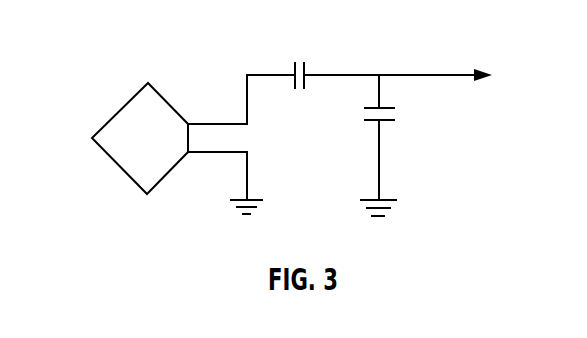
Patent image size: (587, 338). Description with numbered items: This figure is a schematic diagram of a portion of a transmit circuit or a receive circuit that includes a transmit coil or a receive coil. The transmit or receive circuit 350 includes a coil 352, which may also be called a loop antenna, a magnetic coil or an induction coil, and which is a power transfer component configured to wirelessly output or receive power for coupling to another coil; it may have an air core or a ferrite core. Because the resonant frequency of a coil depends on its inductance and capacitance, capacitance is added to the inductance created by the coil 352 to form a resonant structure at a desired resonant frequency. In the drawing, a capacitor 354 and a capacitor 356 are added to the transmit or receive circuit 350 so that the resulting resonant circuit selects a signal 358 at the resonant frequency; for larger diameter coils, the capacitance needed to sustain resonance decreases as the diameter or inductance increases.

The transmit or receive circuit 350 is at (165, 46).
The coil 352 is at (118, 112).
The capacitor 354 is at (308, 72).
The capacitor 356 is at (385, 122).
The signal 358 is at (413, 75).